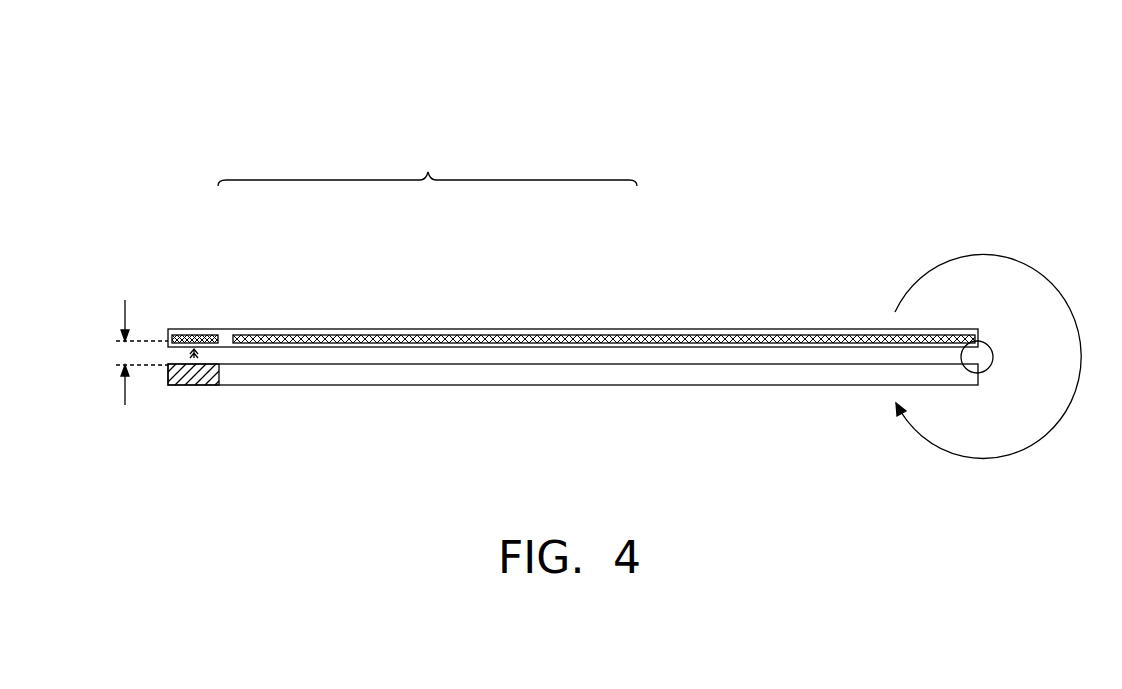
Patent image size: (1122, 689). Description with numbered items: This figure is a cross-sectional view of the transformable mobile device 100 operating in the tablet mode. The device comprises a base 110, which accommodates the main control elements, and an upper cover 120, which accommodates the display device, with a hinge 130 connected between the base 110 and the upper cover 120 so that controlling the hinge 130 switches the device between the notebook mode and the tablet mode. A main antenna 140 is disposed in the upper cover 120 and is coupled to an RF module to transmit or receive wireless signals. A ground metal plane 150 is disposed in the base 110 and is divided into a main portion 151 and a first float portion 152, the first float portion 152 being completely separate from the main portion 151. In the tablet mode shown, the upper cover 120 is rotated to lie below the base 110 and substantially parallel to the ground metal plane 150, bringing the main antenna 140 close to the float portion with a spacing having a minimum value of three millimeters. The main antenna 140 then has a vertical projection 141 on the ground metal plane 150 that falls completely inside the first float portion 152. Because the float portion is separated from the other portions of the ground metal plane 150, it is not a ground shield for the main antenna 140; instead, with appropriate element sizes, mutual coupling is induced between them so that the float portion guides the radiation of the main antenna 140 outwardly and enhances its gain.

The transformable mobile device 100 is at (240, 41).
The base 110 is at (570, 270).
The upper cover 120 is at (573, 411).
The hinge 130 is at (993, 354).
The main antenna 140 is at (200, 385).
The vertical projection 141 is at (208, 348).
The ground metal plane 150 is at (427, 163).
The main portion 151 is at (607, 336).
The first float portion 152 is at (204, 336).